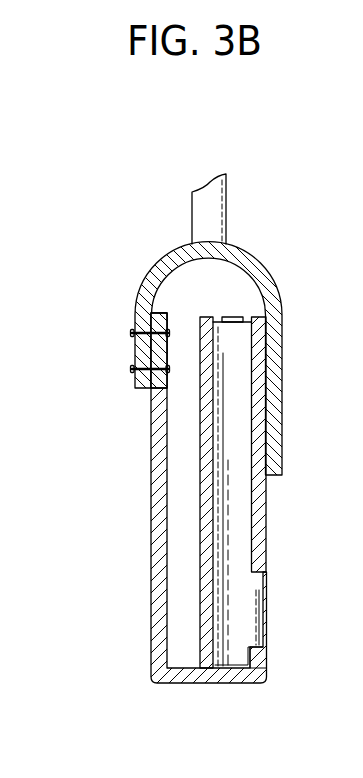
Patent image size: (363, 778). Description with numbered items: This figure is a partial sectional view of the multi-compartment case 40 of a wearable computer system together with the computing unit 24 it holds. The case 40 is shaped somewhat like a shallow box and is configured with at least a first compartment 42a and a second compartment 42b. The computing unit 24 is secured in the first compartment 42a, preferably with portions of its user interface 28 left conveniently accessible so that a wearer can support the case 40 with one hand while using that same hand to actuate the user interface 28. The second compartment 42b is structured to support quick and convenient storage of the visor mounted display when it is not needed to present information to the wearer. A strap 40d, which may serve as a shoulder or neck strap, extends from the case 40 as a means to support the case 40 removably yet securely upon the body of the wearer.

The case 40 is at (278, 368).
The strap 40d is at (215, 222).
The second compartment 42b is at (177, 540).
The first compartment 42a is at (240, 647).
The computing unit 24 is at (242, 558).
The user interface 28 is at (265, 627).